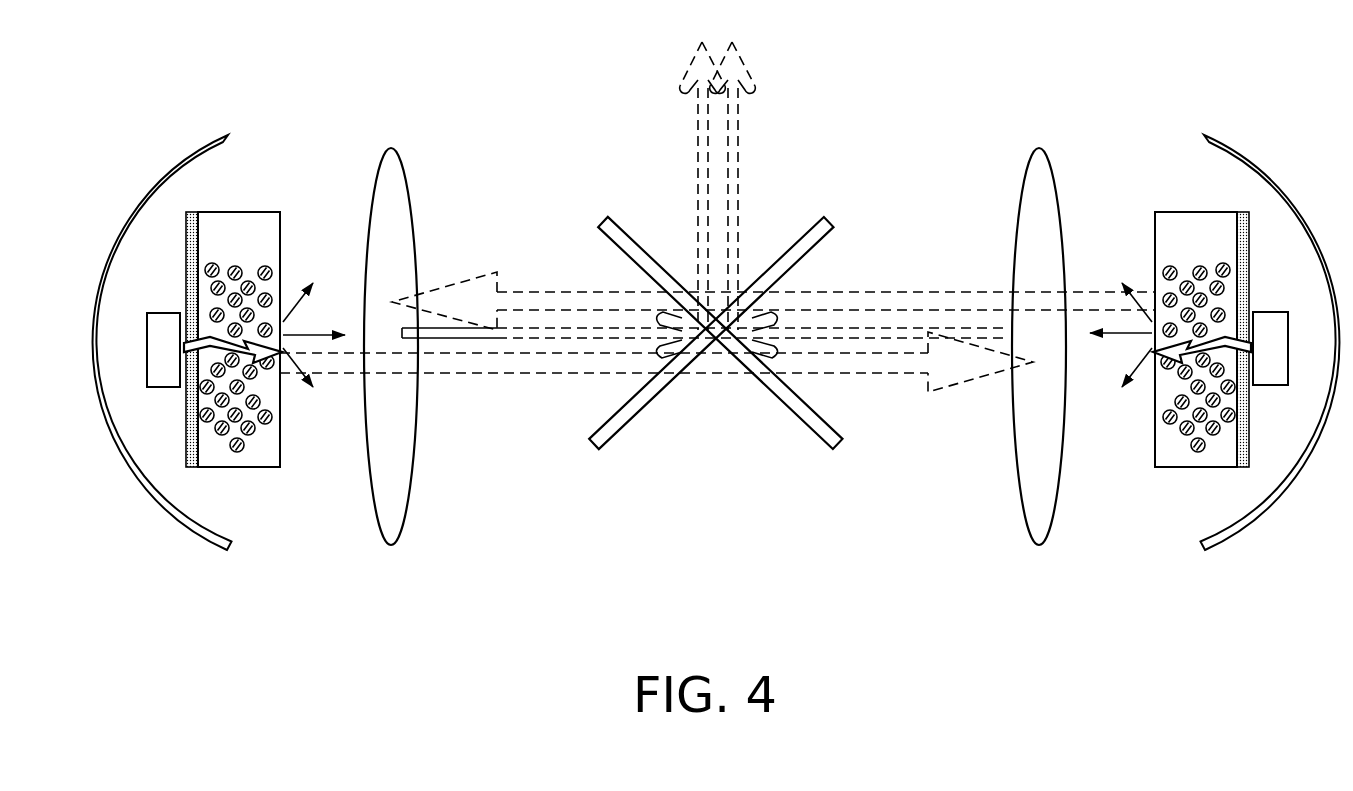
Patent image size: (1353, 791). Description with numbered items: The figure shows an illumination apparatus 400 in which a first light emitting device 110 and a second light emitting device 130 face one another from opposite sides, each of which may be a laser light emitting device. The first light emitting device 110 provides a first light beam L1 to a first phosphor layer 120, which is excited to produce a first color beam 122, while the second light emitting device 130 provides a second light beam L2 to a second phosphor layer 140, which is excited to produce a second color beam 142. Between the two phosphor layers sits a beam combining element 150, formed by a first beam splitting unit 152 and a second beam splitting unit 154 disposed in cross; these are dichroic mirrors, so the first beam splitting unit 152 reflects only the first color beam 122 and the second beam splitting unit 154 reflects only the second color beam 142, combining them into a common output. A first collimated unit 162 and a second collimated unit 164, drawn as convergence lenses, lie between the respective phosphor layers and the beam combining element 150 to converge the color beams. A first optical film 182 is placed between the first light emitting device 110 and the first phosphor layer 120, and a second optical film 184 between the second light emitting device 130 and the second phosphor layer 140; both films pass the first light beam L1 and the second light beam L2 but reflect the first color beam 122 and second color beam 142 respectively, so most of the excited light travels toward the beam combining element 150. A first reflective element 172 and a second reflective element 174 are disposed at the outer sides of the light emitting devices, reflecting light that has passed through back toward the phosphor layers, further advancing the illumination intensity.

The first light emitting device 110 is at (165, 313).
The first phosphor layer 120 is at (262, 212).
The first color beam 122 is at (298, 290).
The second light emitting device 130 is at (1275, 312).
The second phosphor layer 140 is at (1165, 212).
The second color beam 142 is at (900, 335).
The beam combining element 150 is at (719, 409).
The first beam splitting unit 152 is at (630, 430).
The second beam splitting unit 154 is at (643, 547).
The first collimated unit 162 is at (398, 165).
The second collimated unit 164 is at (1042, 165).
The first reflective element 172 is at (178, 160).
The second reflective element 174 is at (1245, 165).
The first optical film 182 is at (192, 212).
The second optical film 184 is at (1243, 212).
The illumination apparatus 400 is at (1208, 610).
The first light beam L1 is at (190, 378).
The second light beam L2 is at (1243, 378).